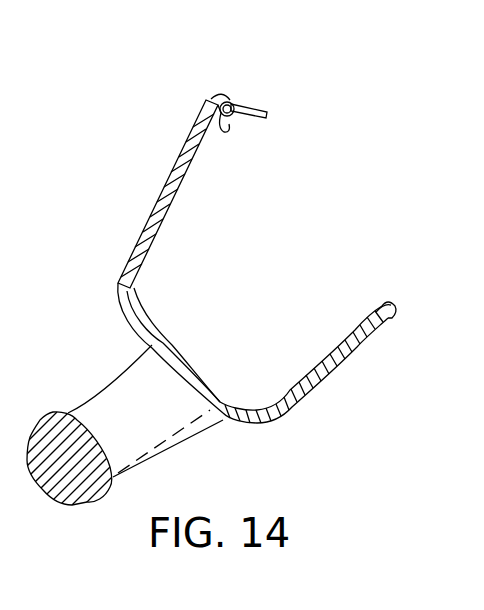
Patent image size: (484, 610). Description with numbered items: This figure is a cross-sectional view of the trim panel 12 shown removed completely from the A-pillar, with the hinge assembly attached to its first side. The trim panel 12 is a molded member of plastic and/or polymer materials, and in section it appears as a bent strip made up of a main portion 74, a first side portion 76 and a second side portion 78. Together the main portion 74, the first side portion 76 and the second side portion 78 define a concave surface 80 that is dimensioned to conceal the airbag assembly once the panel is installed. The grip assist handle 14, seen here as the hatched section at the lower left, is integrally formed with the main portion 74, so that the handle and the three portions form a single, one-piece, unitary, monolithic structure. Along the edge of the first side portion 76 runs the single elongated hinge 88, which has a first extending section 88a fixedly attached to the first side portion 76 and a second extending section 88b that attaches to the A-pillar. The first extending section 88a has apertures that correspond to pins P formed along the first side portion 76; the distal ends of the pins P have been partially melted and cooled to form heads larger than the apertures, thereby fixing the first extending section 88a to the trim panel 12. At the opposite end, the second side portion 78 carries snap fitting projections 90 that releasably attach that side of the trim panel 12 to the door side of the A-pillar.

The trim panel 12 is at (115, 281).
The grip assist handle 14 is at (58, 473).
The main portion 74 is at (193, 380).
The first side portion 76 is at (168, 177).
The second side portion 78 is at (320, 385).
The concave surface 80 is at (167, 347).
The hinge 88 is at (230, 98).
The first extending section 88a is at (206, 101).
The second extending section 88b is at (257, 100).
The snap fitting projections 90 is at (390, 312).
The pins P is at (216, 131).